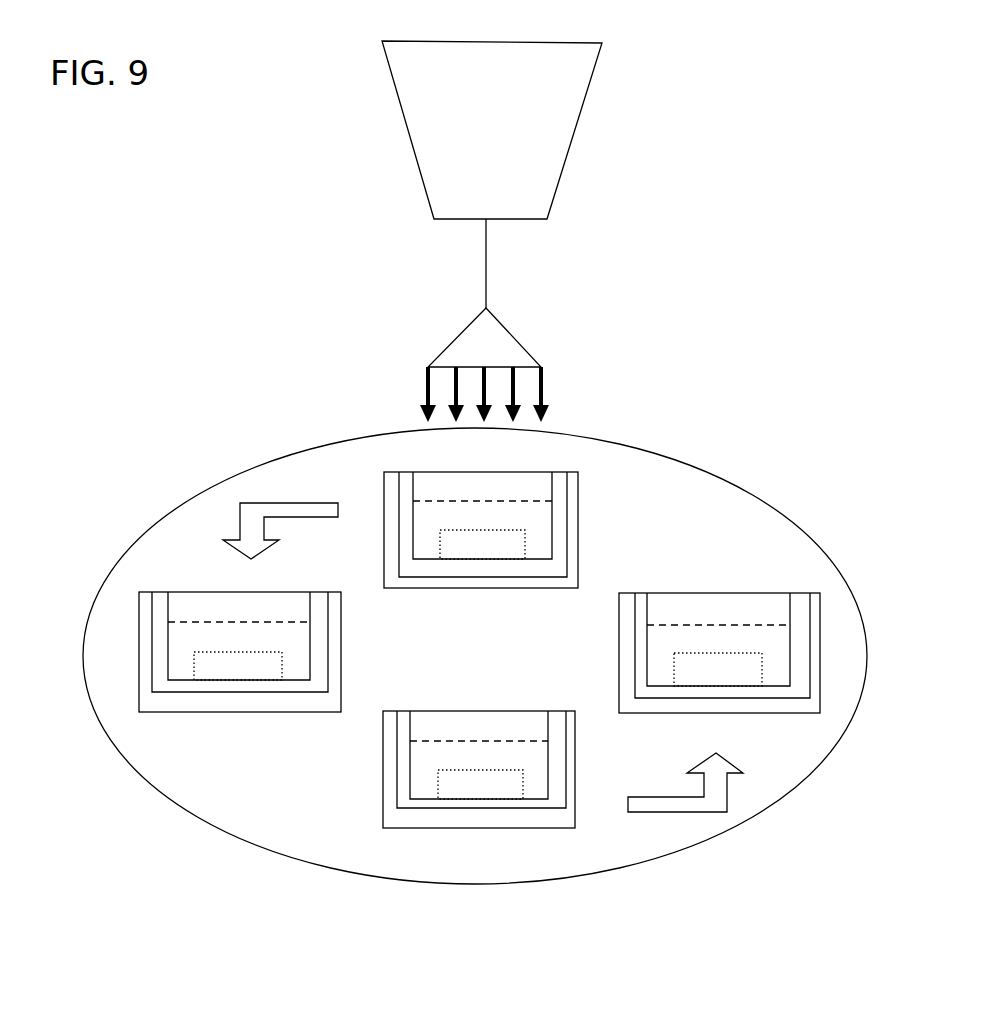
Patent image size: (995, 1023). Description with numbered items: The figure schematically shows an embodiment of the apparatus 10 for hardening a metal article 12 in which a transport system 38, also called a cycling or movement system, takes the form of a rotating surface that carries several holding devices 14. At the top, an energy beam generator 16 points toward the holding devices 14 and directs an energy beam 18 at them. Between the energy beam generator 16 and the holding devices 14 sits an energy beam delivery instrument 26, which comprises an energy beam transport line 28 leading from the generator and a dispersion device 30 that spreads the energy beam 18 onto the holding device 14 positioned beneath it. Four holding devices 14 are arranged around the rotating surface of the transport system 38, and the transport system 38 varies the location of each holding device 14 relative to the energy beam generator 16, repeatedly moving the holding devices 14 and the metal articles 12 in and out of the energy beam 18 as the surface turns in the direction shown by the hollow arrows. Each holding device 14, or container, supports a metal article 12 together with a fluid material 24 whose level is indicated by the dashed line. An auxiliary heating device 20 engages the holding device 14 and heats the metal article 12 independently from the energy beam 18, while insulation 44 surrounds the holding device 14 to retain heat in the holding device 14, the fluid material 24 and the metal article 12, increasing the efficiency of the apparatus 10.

The apparatus 10 is at (717, 88).
The energy beam generator 16 is at (398, 99).
The energy beam delivery instrument 26 is at (572, 273).
The energy beam transport line 28 is at (486, 262).
The dispersion device 30 is at (472, 320).
The energy beam 18 is at (541, 382).
The transport system 38 is at (199, 492).
The insulation 44 is at (207, 712).
The auxiliary heating device 20 is at (308, 690).
The holding device 14 is at (168, 610).
The fluid material 24 is at (182, 623).
The metal article 12 is at (270, 652).